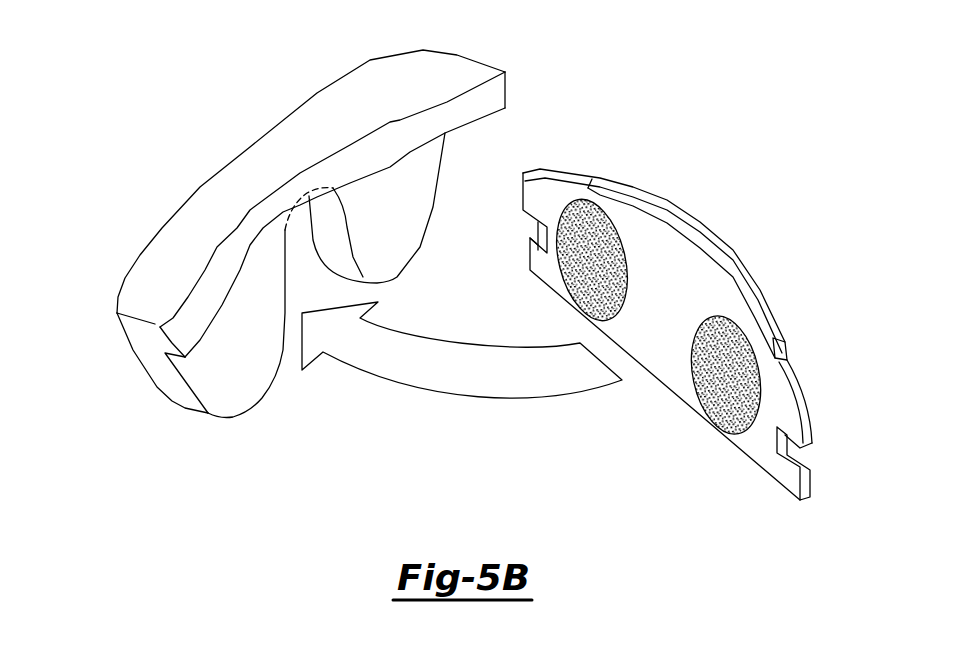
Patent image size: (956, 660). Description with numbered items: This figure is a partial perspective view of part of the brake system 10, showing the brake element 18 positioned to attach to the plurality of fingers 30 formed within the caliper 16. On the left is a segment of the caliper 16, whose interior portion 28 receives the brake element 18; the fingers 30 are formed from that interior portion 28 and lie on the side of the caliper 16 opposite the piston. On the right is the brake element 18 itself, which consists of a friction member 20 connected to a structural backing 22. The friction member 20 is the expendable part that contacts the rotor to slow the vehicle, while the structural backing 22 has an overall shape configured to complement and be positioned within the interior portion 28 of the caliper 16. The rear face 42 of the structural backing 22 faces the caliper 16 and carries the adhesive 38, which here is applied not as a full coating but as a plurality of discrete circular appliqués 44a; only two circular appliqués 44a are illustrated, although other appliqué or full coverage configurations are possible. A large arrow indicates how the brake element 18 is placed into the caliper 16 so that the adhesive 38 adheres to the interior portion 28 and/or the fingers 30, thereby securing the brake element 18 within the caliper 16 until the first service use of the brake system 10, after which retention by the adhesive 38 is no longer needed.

The brake system 10 is at (359, 519).
The caliper 16 is at (140, 330).
The brake element 18 is at (685, 314).
The friction member 20 is at (752, 305).
The structural backing 22 is at (720, 410).
The interior portion 28 is at (240, 321).
The fingers 30 is at (255, 380).
The adhesive 38 is at (568, 204).
The rear face 42 is at (641, 293).
The circular appliqués 44a is at (617, 233).